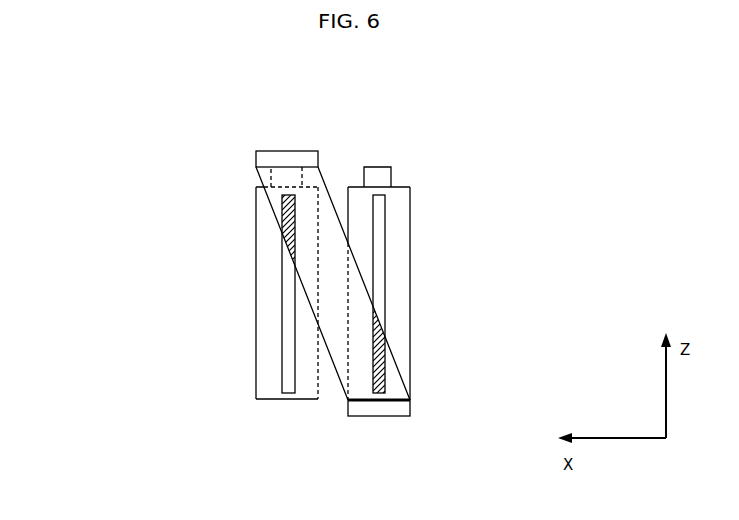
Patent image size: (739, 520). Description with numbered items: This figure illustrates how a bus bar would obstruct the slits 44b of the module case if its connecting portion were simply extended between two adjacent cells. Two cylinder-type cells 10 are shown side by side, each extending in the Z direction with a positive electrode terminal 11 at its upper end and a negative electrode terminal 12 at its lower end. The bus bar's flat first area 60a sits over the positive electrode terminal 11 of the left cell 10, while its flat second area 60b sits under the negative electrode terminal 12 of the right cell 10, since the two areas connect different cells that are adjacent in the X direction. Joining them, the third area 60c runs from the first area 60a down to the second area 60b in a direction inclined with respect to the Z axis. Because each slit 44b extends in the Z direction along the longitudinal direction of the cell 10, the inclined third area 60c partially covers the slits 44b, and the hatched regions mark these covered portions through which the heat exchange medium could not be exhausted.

The cell 10 is at (246, 313).
The positive electrode terminal 11 is at (268, 175).
The negative electrode terminal 12 is at (283, 401).
The slit 44b is at (277, 199).
The first area 60a is at (283, 158).
The second area 60b is at (382, 408).
The third area 60c is at (334, 182).